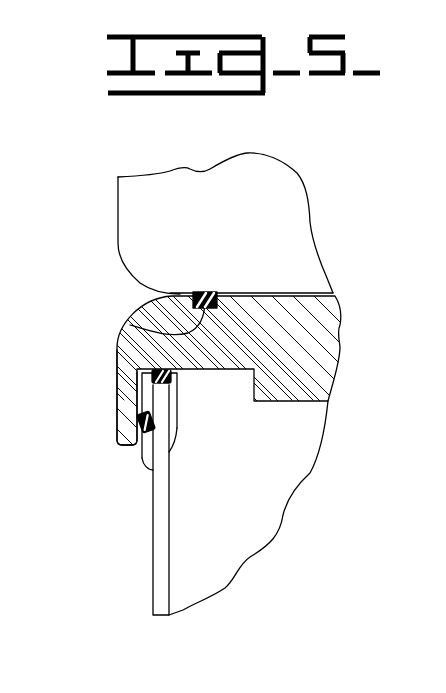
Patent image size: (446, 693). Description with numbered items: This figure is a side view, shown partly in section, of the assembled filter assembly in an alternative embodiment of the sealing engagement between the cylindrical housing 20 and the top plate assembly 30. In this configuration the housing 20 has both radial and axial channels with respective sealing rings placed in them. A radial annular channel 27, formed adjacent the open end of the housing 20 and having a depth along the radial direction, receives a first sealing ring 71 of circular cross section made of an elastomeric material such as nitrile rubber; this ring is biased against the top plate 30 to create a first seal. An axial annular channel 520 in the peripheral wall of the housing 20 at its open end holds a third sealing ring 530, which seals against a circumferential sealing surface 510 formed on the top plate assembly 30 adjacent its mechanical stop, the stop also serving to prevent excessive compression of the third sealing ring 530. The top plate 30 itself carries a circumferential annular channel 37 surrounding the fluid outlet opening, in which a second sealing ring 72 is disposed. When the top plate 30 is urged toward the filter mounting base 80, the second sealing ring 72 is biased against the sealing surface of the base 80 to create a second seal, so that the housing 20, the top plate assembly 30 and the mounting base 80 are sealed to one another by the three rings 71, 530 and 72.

The filter mounting base 80 is at (277, 249).
The top plate assembly 30 is at (307, 351).
The third sealing ring 530 is at (118, 348).
The circumferential annular channel 37 is at (130, 325).
The second sealing ring 72 is at (203, 292).
The cylindrical housing 20 is at (152, 572).
The circumferential sealing surface 510 is at (170, 385).
The radial annular channel 27 is at (152, 466).
The axial annular channel 520 is at (158, 384).
The first sealing ring 71 is at (138, 420).